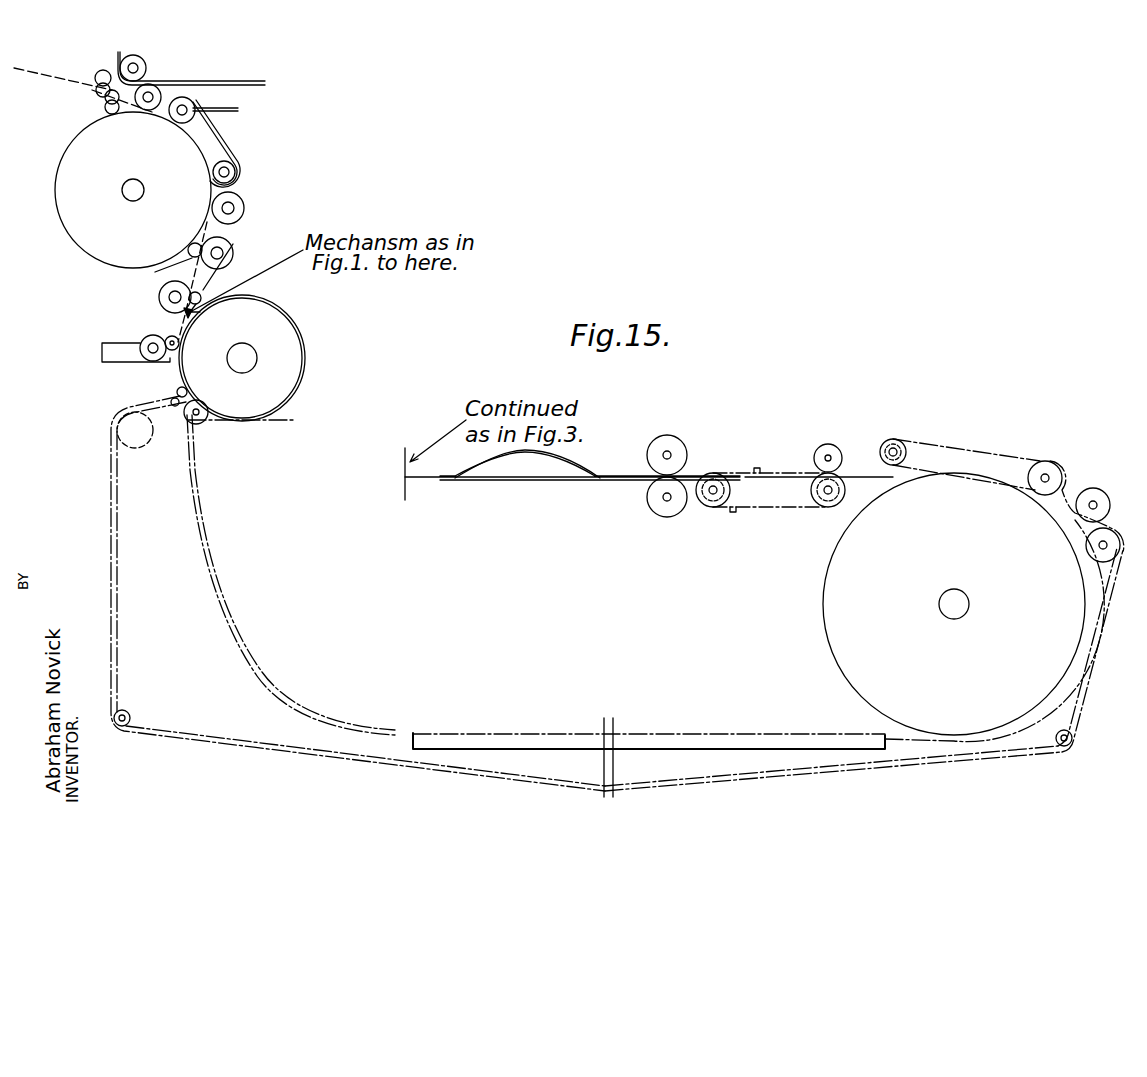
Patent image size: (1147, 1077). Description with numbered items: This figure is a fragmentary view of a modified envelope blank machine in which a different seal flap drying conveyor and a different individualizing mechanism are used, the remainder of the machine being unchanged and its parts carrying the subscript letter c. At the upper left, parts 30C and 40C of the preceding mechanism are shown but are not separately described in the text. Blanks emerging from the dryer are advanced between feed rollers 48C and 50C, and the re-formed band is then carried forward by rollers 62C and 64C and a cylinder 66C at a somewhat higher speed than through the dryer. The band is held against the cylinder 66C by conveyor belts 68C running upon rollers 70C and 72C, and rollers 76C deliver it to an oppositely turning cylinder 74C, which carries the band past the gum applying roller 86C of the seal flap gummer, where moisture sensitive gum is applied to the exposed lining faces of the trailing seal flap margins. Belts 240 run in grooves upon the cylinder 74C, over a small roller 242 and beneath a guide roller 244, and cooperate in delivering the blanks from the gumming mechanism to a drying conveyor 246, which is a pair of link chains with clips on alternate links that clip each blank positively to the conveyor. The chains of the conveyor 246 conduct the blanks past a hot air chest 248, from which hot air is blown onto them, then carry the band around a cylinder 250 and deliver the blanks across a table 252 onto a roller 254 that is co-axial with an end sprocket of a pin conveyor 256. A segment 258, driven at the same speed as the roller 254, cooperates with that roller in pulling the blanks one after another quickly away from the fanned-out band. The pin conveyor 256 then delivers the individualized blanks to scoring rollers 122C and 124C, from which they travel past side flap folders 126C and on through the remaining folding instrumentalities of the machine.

The feed roller 30C is at (165, 81).
The guide bars 40C is at (233, 109).
The feed roller 48C is at (98, 72).
The feed roller 50C is at (98, 88).
The roller 62C is at (105, 97).
The roller 64C is at (104, 108).
The cylinder 66C is at (65, 152).
The conveyor belt 68C is at (222, 130).
The roller 70C is at (185, 108).
The roller 72C is at (235, 172).
The cylinder 74C is at (285, 338).
The roller 76C is at (226, 253).
The gum applying roller 86C is at (168, 338).
The scoring roller 122C is at (662, 440).
The scoring roller 124C is at (662, 512).
The side flap folder 126C is at (527, 470).
The belt 240 is at (208, 422).
The small roller 242 is at (206, 410).
The guide roller 244 is at (176, 392).
The drying conveyor 246 is at (212, 552).
The hot air chest 248 is at (527, 745).
The cylinder 250 is at (826, 618).
The table 252 is at (860, 476).
The roller 254 is at (822, 506).
The pin conveyor 256 is at (780, 463).
The segment 258 is at (820, 448).